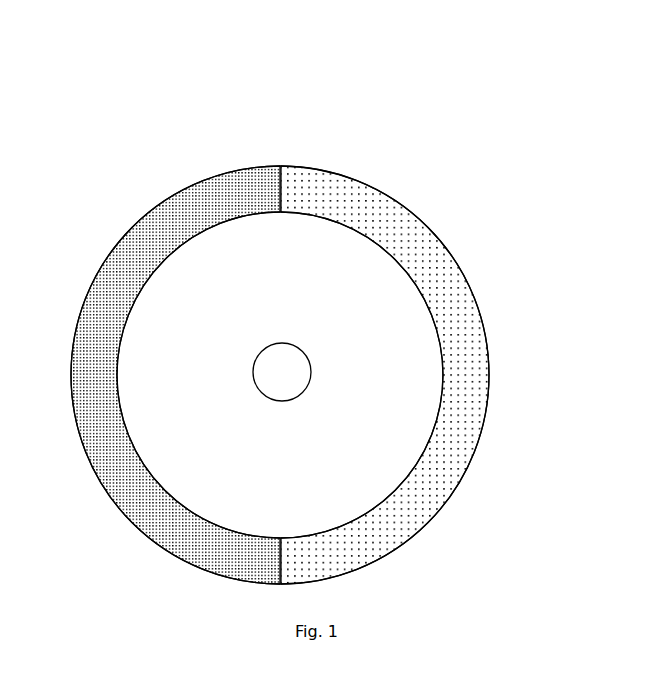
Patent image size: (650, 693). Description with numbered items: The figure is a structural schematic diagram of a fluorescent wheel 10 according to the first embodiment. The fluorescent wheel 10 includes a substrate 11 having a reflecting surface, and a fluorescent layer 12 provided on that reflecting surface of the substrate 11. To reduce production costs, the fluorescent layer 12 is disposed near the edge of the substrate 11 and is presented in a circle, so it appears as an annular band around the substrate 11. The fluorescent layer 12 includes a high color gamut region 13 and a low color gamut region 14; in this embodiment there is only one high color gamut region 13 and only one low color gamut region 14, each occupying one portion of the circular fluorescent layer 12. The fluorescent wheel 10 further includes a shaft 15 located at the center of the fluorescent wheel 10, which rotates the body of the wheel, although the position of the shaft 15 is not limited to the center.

The fluorescent wheel 10 is at (128, 43).
The substrate 11 is at (408, 358).
The fluorescent layer 12 is at (327, 100).
The high color gamut region 13 is at (338, 197).
The low color gamut region 14 is at (238, 195).
The shaft 15 is at (285, 365).